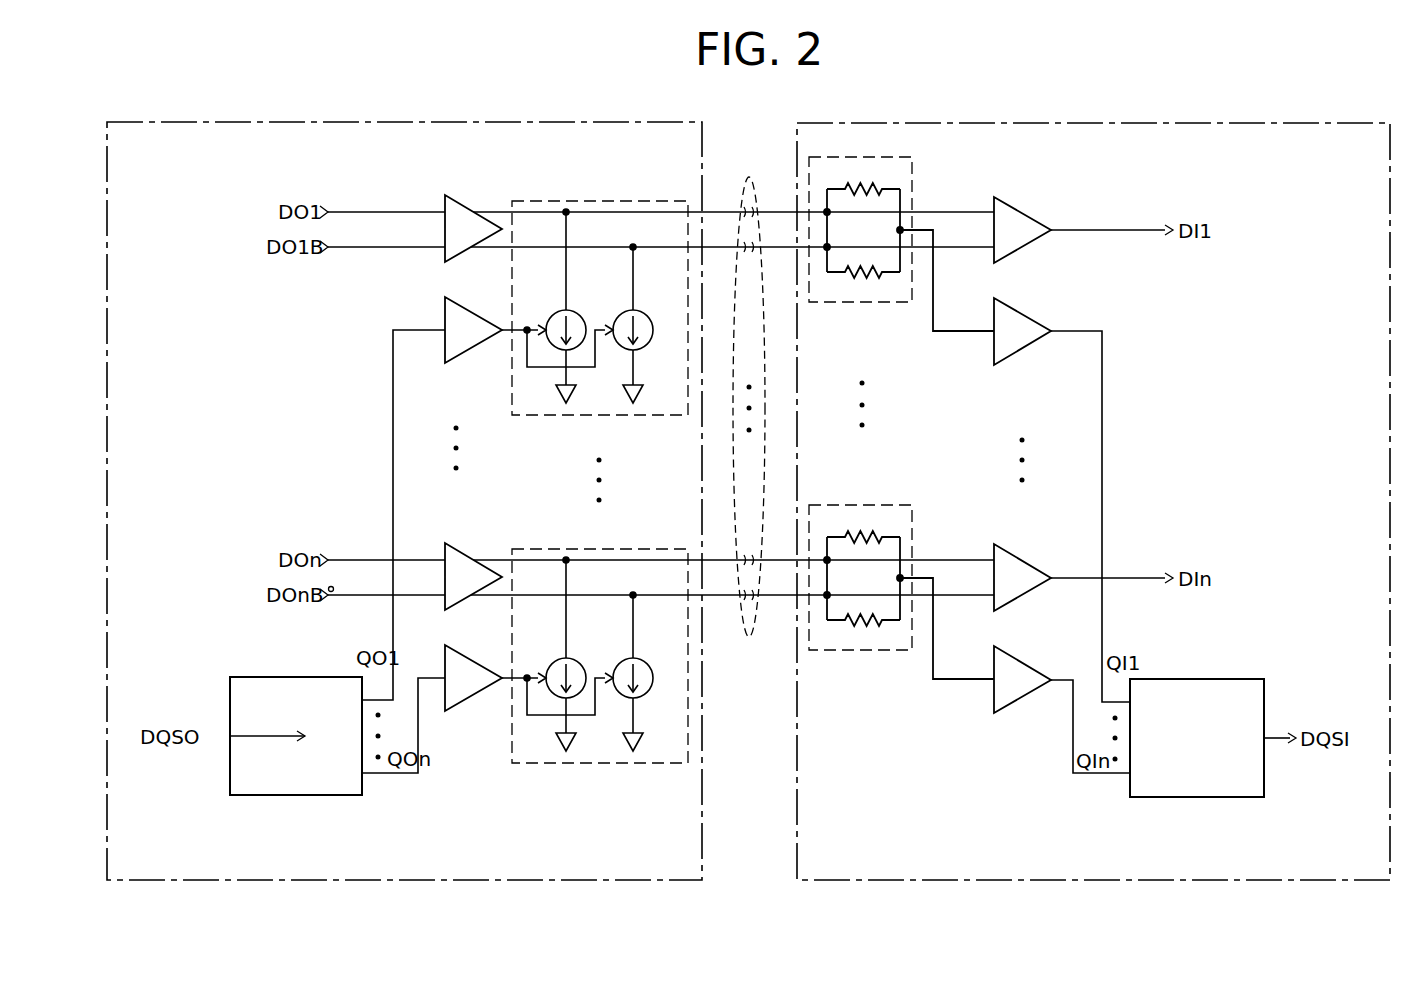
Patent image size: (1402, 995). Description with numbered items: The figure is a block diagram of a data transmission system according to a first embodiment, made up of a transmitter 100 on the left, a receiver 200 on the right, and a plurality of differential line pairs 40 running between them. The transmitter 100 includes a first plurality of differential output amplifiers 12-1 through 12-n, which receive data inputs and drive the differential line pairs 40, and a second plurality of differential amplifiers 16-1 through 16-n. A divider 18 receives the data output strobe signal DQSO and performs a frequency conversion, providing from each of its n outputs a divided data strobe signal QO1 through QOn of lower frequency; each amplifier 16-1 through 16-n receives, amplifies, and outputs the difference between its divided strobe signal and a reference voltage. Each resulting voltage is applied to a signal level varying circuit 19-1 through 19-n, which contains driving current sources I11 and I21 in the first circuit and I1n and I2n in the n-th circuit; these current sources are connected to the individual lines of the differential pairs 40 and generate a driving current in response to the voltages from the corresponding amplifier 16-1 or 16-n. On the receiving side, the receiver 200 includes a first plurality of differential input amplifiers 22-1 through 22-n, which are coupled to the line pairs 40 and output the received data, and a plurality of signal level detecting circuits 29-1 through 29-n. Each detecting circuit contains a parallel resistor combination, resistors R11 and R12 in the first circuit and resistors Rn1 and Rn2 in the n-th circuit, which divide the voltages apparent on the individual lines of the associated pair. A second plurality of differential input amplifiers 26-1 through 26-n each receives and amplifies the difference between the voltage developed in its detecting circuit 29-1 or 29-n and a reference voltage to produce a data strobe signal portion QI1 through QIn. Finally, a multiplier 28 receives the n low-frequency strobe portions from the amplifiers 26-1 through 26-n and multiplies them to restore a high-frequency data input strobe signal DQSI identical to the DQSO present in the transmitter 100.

The transmitter 100 is at (440, 122).
The receiver 200 is at (1104, 123).
The first differential output amplifier 12-1 is at (482, 181).
The first differential output amplifier 12-n is at (482, 529).
The second differential output amplifier 16-1 is at (482, 283).
The second differential output amplifier 16-n is at (482, 631).
The signal level varying circuit 19-1 is at (595, 288).
The signal level varying circuit 19-n is at (595, 636).
The driving current source I11 is at (580, 313).
The driving current source I21 is at (647, 313).
The driving current source I1n is at (580, 661).
The driving current source I2n is at (647, 661).
The divider 18 is at (297, 677).
The differential line pairs 40 is at (749, 637).
The signal level detecting circuit 29-1 is at (901, 253).
The signal level detecting circuit 29-n is at (901, 571).
The resistor R11 is at (863, 178).
The resistor R12 is at (863, 284).
The resistor Rn1 is at (863, 526).
The resistor Rn2 is at (863, 632).
The first differential input amplifier 22-1 is at (1025, 183).
The first differential input amplifier 22-n is at (1025, 530).
The second differential input amplifier 26-1 is at (1025, 284).
The second differential input amplifier 26-n is at (1025, 632).
The multiplier 28 is at (1198, 679).